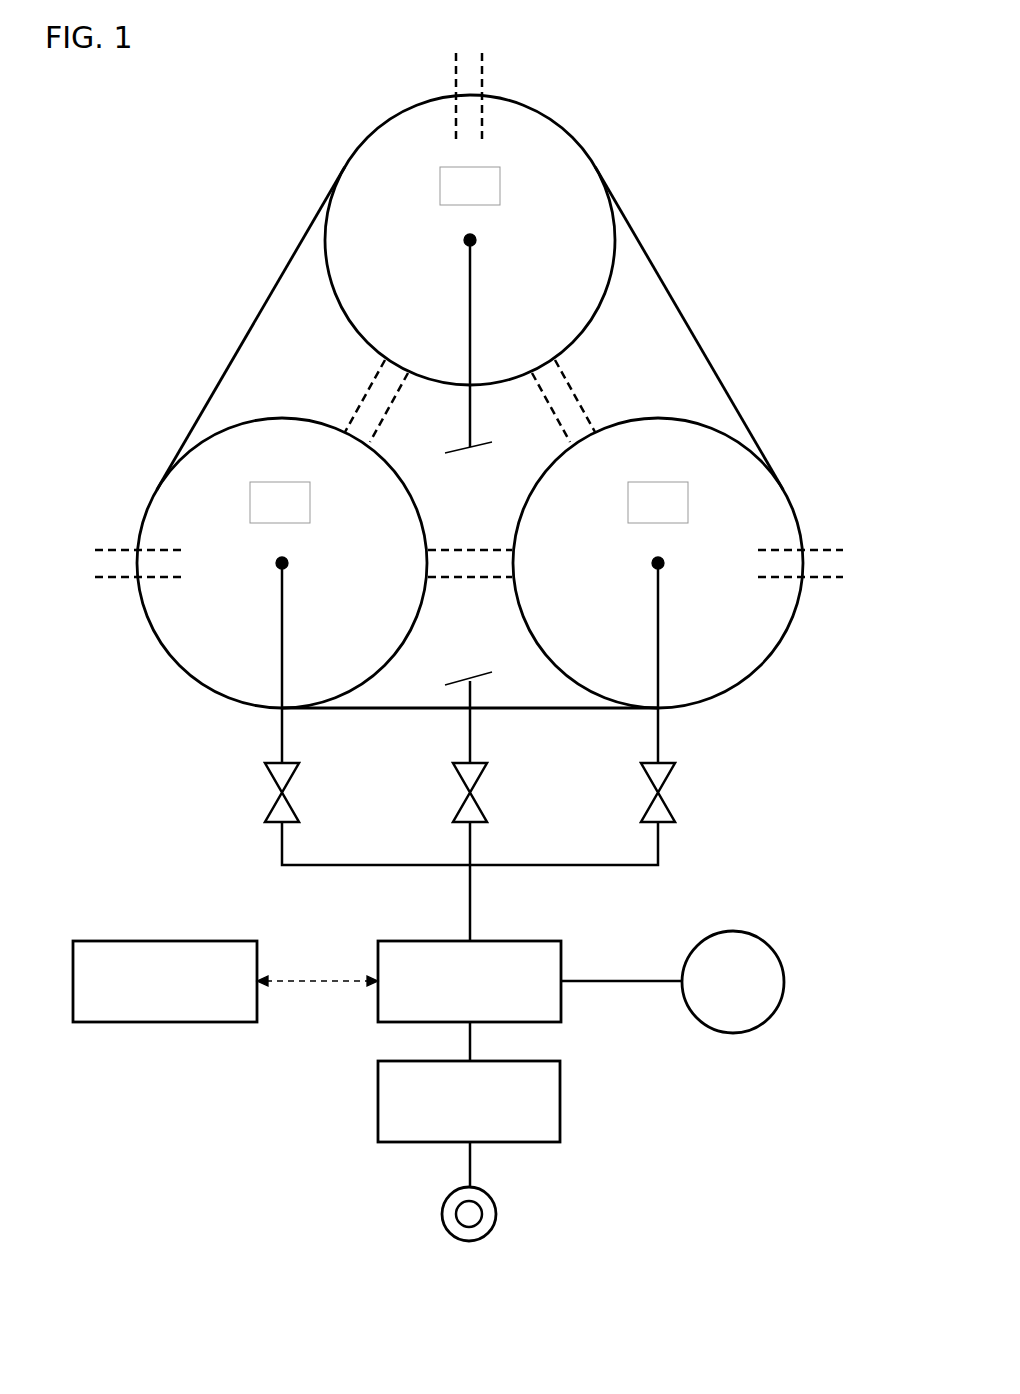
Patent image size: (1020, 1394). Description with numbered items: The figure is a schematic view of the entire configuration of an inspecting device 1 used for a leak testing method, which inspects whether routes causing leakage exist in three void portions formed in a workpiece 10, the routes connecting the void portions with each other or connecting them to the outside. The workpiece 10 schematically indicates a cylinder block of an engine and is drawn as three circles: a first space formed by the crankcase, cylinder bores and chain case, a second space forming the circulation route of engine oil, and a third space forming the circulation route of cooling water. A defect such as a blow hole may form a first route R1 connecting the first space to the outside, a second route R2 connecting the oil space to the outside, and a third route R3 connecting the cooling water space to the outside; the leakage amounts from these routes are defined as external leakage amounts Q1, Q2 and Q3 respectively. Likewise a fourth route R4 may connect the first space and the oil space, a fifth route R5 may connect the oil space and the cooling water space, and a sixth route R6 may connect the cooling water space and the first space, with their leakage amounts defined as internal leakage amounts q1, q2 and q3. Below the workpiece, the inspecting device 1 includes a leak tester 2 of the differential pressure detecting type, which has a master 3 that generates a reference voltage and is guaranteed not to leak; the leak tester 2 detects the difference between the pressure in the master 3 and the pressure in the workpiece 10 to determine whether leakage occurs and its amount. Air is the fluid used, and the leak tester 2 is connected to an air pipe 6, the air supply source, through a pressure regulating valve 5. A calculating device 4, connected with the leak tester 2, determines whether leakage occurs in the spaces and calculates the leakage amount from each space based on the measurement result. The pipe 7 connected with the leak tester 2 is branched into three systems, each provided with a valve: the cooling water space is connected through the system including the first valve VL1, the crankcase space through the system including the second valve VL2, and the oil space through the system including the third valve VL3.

The inspecting device 1 is at (645, 1113).
The workpiece 10 is at (226, 268).
The leak tester 2 is at (563, 1023).
The master 3 is at (735, 930).
The calculating device 4 is at (165, 940).
The pressure regulating valve 5 is at (378, 1099).
The air pipe 6 is at (442, 1212).
The pipe 7 is at (471, 902).
The external leakage amount Q1 is at (520, 78).
The external leakage amount Q2 is at (821, 606).
The external leakage amount Q3 is at (120, 606).
The internal leakage amount q1 is at (586, 401).
The internal leakage amount q2 is at (470, 591).
The internal leakage amount q3 is at (354, 401).
The first route R1 is at (480, 80).
The second route R2 is at (812, 578).
The third route R3 is at (118, 578).
The fourth route R4 is at (580, 395).
The fifth route R5 is at (462, 570).
The sixth route R6 is at (360, 395).
The first valve VL1 is at (258, 792).
The second valve VL2 is at (448, 792).
The third valve VL3 is at (636, 792).